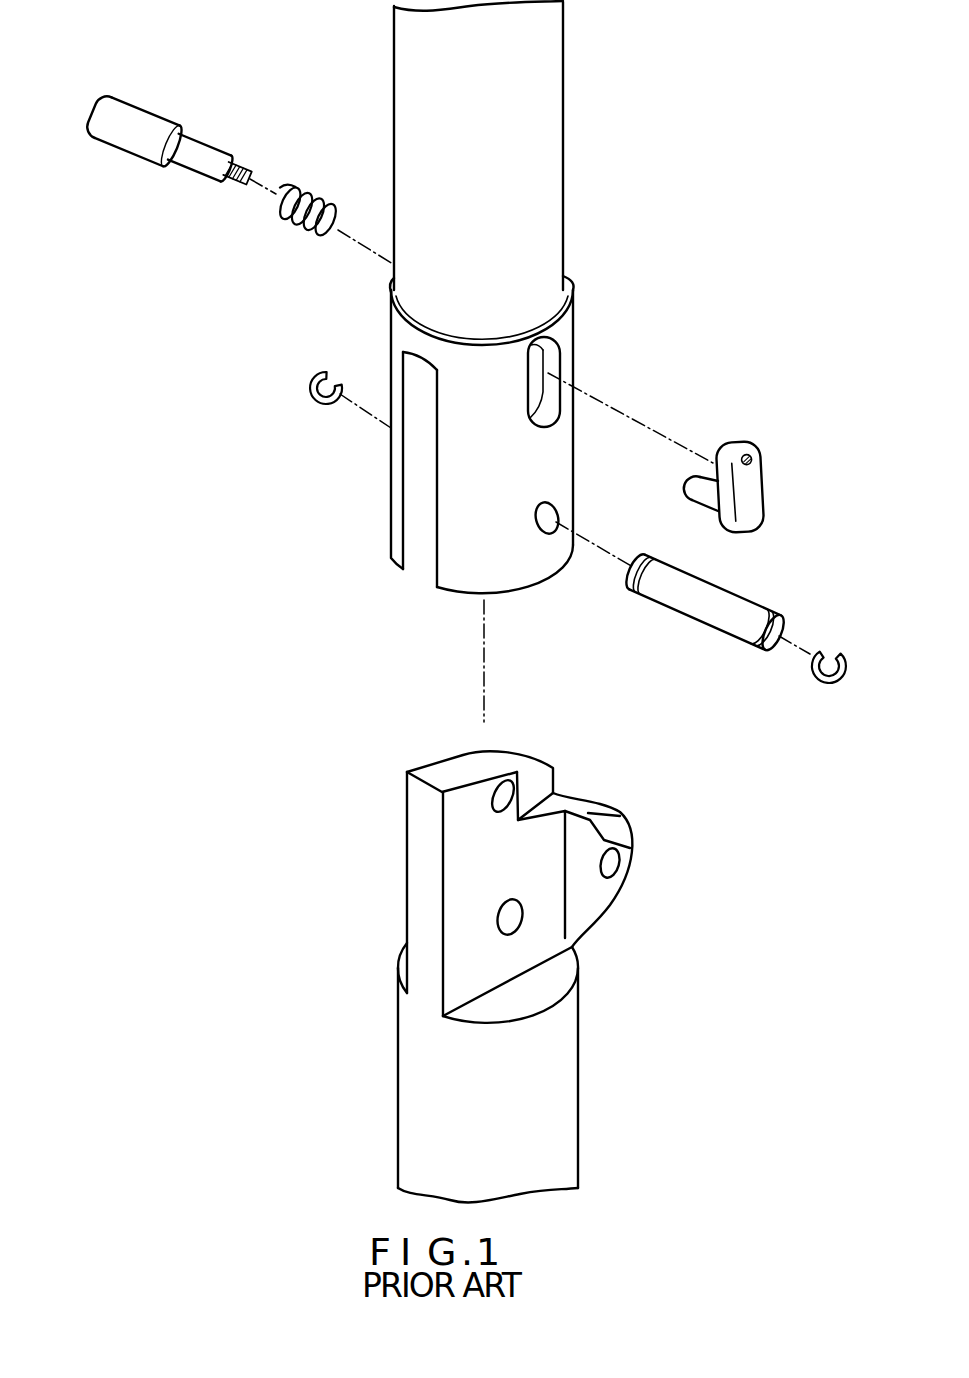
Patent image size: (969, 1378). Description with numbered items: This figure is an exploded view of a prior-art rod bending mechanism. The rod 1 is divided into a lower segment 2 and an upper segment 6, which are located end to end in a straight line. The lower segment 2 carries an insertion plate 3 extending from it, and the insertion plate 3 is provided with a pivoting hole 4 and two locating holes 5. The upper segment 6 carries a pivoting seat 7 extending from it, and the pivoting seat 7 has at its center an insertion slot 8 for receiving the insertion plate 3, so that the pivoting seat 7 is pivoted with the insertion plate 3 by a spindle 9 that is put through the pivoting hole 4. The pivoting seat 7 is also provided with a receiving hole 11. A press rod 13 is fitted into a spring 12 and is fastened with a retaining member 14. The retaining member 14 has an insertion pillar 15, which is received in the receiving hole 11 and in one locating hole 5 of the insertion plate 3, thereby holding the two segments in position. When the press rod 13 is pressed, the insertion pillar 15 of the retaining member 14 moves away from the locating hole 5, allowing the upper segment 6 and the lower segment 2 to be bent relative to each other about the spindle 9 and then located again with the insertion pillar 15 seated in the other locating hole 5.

The rod 1 is at (735, 97).
The lower segment 2 is at (555, 1110).
The insertion plate 3 is at (412, 874).
The pivoting hole 4 is at (525, 918).
The locating holes 5 is at (505, 788).
The upper segment 6 is at (550, 137).
The pivoting seat 7 is at (571, 460).
The insertion slot 8 is at (415, 515).
The spindle 9 is at (732, 605).
The receiving hole 11 is at (540, 397).
The spring 12 is at (307, 193).
The press rod 13 is at (160, 121).
The retaining member 14 is at (752, 484).
The insertion pillar 15 is at (694, 500).